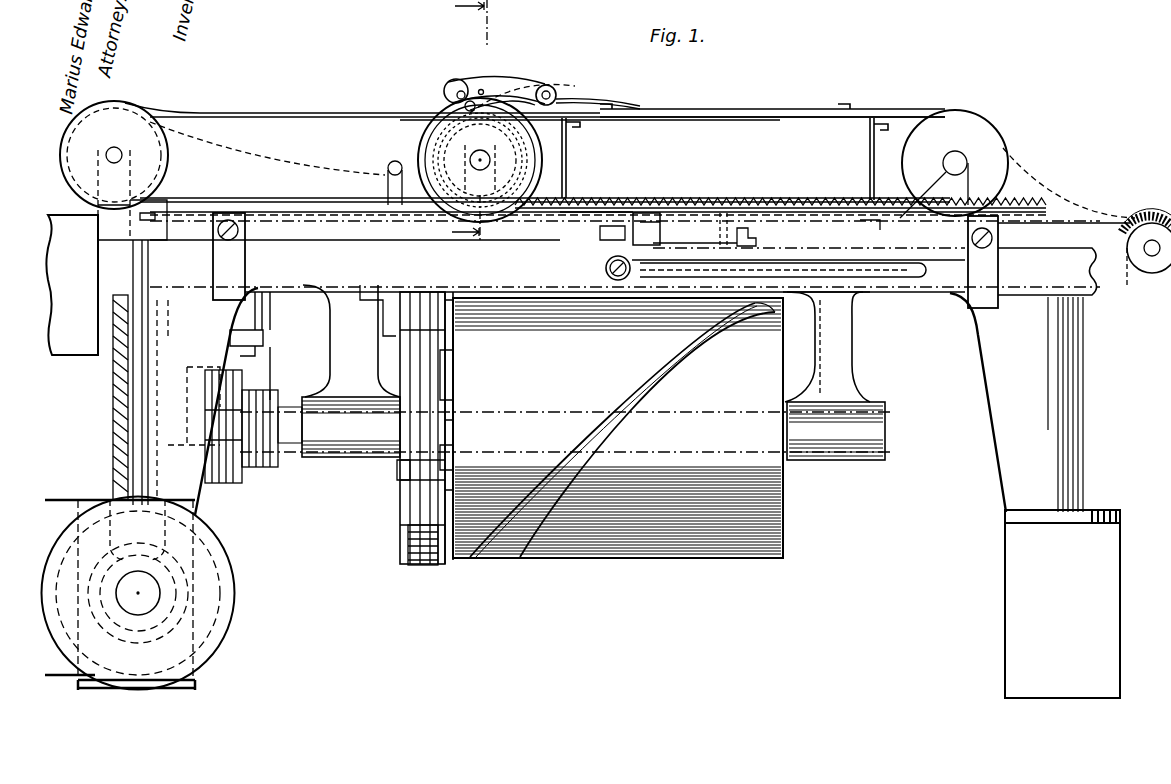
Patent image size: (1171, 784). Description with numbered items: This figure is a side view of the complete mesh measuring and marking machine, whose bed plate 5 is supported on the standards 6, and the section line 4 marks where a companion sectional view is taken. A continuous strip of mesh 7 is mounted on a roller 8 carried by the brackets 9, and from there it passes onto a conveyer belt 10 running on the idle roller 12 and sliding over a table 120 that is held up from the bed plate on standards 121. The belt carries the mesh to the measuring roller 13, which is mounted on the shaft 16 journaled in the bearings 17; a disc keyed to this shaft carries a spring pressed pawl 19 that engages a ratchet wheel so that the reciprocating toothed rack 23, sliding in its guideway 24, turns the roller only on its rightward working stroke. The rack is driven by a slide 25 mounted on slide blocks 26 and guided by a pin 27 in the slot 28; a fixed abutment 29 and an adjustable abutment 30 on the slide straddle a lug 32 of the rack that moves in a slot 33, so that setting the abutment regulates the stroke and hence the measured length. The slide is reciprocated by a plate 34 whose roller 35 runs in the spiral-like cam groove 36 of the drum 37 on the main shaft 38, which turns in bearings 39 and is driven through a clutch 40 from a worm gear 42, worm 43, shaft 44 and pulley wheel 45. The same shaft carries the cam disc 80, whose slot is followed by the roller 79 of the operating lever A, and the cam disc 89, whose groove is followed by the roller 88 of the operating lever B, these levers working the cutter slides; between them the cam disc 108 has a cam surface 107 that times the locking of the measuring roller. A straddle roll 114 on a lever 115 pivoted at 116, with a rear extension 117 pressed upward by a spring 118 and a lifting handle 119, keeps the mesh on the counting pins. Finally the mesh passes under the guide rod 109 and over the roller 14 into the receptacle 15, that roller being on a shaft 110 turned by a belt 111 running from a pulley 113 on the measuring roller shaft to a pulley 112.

The section line 4 is at (461, 122).
The bed plate 5 is at (625, 238).
The standards 6 is at (222, 338).
The strip of mesh 7 is at (1108, 212).
The roller 8 is at (1064, 259).
The brackets 9 is at (1108, 268).
The conveyer belt 10 is at (947, 112).
The idle roller 12 is at (954, 164).
The measuring roller 13 is at (567, 136).
The roller 14 is at (121, 104).
The receptacle 15 is at (72, 285).
The shaft 16 is at (480, 171).
The bearings 17 is at (488, 162).
The spring pressed pawl 19 is at (476, 100).
The toothed rack 23 is at (700, 200).
The guideway 24 is at (598, 189).
The slide 25 is at (625, 252).
The slide blocks 26 is at (242, 267).
The pin 27 is at (636, 265).
The slot 28 is at (898, 284).
The fixed abutment 29 is at (605, 238).
The adjustable abutment 30 is at (757, 241).
The lug 32 is at (682, 205).
The slot 33 is at (590, 207).
The plate 34 is at (805, 310).
The roller 35 is at (818, 322).
The cam groove 36 is at (622, 443).
The drum 37 is at (790, 470).
The main shaft 38 is at (281, 462).
The bearings 39 is at (330, 458).
The clutch 40 is at (218, 484).
The worm gear 42 is at (113, 388).
The worm 43 is at (178, 610).
The shaft 44 is at (152, 593).
The pulley wheel 45 is at (205, 640).
The roller 79 is at (405, 470).
The cam disc 80 is at (410, 525).
The roller 88 is at (456, 478).
The cam disc 89 is at (448, 560).
The cam surface 107 is at (470, 545).
The cam disc 108 is at (420, 568).
The guide rod 109 is at (395, 161).
The shaft 110 is at (124, 155).
The belt 111 is at (314, 118).
The pulley 112 is at (134, 134).
The pulley 113 is at (440, 140).
The straddle roll 114 is at (459, 79).
The lever 115 is at (505, 90).
The pivot 116 is at (557, 95).
The rear extension 117 is at (565, 102).
The spring 118 is at (548, 84).
The handle 119 is at (481, 89).
The table 120 is at (780, 114).
The standards 121 is at (566, 153).
The operating lever A is at (400, 470).
The operating lever B is at (456, 374).